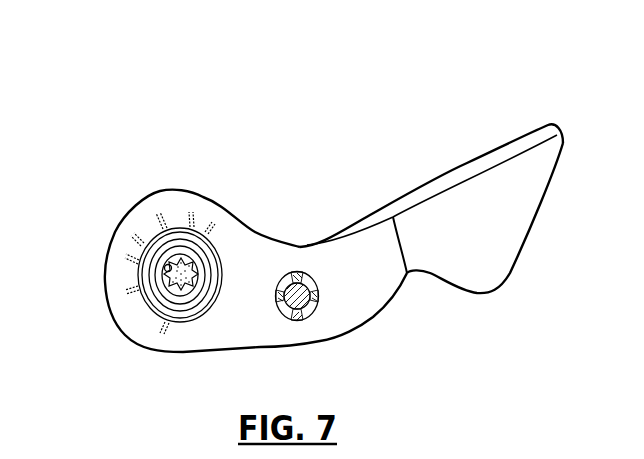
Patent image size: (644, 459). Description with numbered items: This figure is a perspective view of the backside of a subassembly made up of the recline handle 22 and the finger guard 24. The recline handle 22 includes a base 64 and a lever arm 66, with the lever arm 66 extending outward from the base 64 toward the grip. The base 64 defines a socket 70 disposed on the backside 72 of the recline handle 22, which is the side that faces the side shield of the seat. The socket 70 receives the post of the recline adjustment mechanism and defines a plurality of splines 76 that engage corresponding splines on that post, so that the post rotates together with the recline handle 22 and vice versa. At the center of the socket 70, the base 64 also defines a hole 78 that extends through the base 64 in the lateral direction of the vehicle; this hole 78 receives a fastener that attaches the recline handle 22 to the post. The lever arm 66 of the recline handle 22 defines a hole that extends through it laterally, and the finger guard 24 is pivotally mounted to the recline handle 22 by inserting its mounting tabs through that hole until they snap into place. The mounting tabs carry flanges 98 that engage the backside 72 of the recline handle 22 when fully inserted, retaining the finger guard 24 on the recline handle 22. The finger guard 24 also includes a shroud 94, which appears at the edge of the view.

The recline handle 22 is at (319, 248).
The finger guard 24 is at (463, 160).
The base 64 is at (147, 211).
The lever arm 66 is at (347, 258).
The socket 70 is at (182, 276).
The backside 72 is at (280, 330).
The splines 76 is at (295, 282).
The hole 78 is at (162, 272).
The shroud 94 is at (532, 458).
The flanges 98 is at (316, 283).